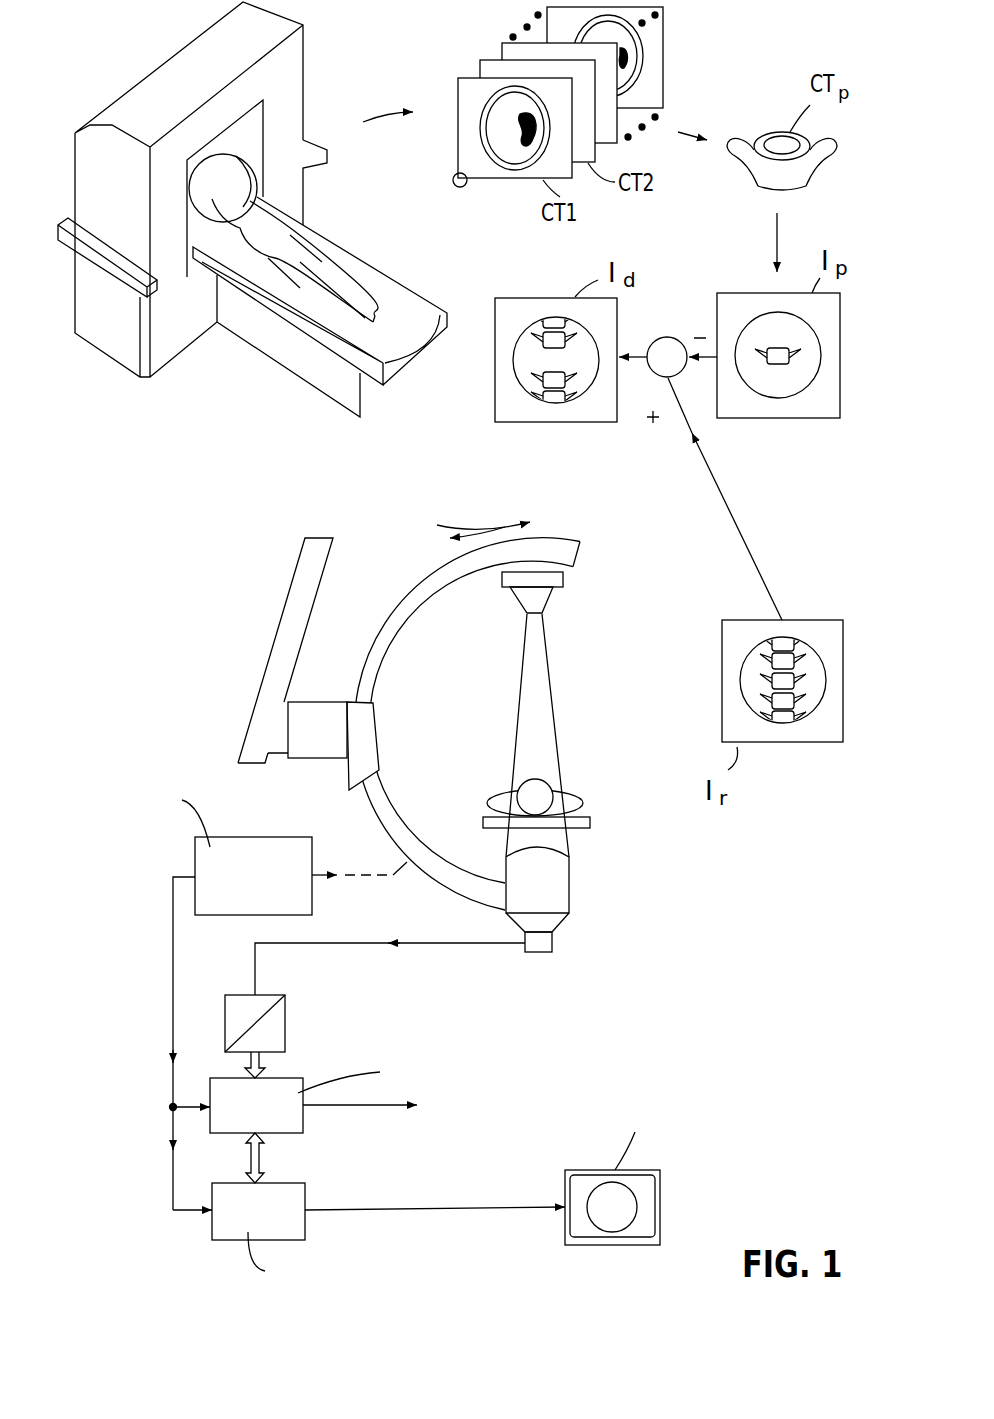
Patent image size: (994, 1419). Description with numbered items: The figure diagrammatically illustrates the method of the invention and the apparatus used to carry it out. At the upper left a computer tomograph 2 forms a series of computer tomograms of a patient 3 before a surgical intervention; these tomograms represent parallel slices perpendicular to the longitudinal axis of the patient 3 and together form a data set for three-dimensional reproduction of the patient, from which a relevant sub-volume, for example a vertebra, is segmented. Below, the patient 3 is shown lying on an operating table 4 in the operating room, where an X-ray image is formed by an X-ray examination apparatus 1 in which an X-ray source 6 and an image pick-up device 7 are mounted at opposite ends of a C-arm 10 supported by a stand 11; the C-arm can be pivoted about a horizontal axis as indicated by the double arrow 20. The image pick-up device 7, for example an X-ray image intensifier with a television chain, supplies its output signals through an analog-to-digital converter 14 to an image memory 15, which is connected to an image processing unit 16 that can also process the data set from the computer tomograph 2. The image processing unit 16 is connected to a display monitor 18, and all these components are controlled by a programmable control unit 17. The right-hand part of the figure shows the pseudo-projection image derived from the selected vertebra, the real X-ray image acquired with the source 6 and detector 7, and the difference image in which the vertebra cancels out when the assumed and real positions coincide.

The X-ray apparatus 1 is at (660, 608).
The computer tomograph 2 is at (340, 80).
The patient 3 is at (282, 248).
The operating table 4 is at (485, 824).
The X-ray source 6 is at (542, 597).
The image pick-up device 7 is at (557, 895).
The C-arm 10 is at (580, 562).
The stand 11 is at (302, 658).
The analog-to-digital converter 14 is at (285, 1027).
The image memory 15 is at (285, 1083).
The image processing unit 16 is at (288, 1182).
The programmable control unit 17 is at (230, 917).
The display monitor 18 is at (662, 1213).
The rotation direction of C-arm 20 is at (465, 521).